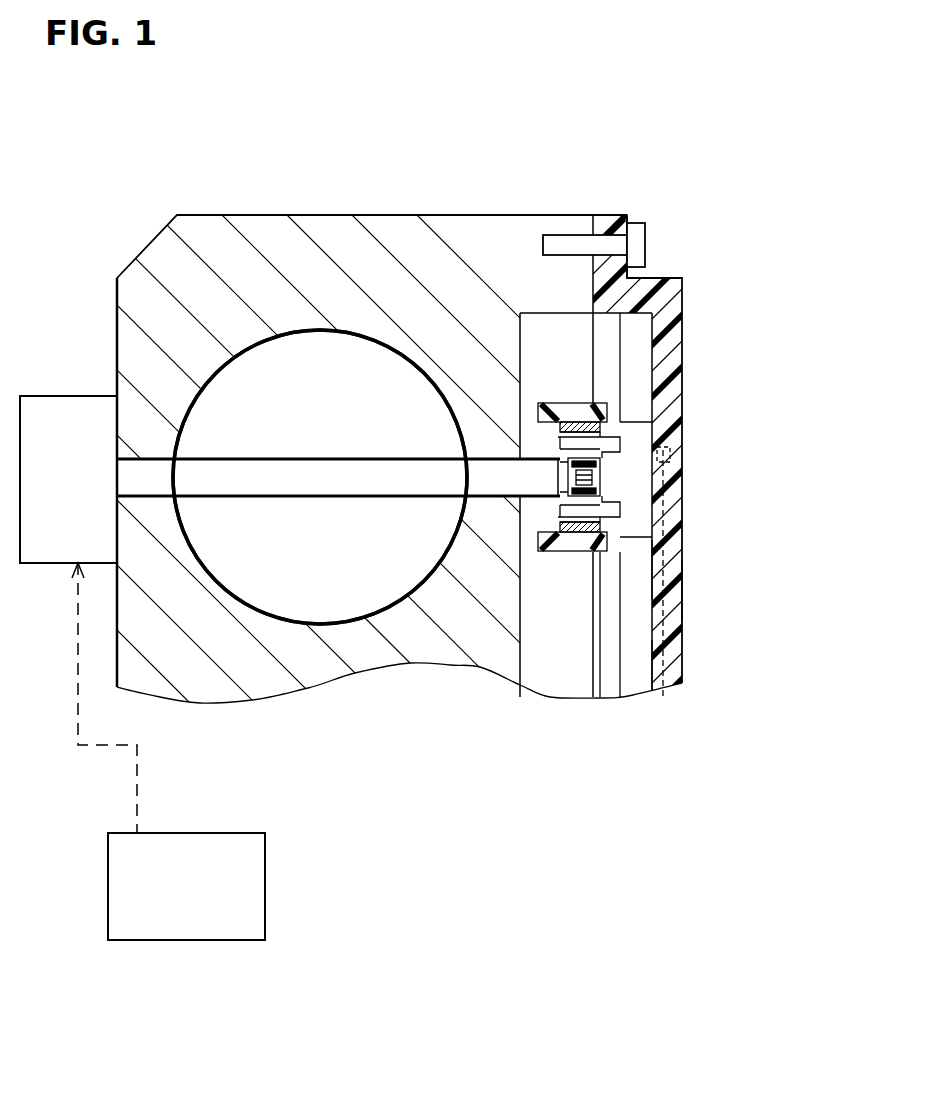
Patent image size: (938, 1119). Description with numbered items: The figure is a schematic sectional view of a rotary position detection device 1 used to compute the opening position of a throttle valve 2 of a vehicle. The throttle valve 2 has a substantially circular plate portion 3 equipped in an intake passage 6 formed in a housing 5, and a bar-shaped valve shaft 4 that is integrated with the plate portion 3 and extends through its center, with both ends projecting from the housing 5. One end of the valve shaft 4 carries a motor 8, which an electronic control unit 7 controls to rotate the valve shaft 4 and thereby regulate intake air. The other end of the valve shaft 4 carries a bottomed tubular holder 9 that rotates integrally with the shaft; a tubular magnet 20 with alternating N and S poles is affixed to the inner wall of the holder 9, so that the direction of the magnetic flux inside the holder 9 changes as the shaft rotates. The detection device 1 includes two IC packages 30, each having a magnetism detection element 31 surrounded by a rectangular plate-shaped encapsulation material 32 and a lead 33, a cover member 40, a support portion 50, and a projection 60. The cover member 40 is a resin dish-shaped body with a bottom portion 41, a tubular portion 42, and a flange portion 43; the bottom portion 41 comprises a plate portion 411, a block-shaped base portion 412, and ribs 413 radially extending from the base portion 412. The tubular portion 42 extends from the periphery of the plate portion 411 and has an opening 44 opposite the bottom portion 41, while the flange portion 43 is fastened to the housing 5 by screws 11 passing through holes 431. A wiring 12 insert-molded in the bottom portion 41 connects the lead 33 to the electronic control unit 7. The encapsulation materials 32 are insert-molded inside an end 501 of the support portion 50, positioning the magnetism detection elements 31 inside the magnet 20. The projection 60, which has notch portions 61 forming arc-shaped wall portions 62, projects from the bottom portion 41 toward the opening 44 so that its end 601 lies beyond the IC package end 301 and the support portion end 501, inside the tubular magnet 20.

The rotary position detection device 1 is at (754, 297).
The throttle valve 2 is at (306, 347).
The plate portion 3 is at (276, 353).
The valve shaft 4 is at (342, 460).
The housing 5 is at (358, 222).
The intake passage 6 is at (397, 395).
The electronic control unit (ECU) 7 is at (196, 840).
The motor 8 is at (53, 400).
The holder 9 is at (564, 424).
The screw 11 is at (640, 226).
The wiring 12 is at (665, 628).
The magnet 20 is at (578, 552).
The IC package 30 is at (560, 462).
The magnetism detection element 31 is at (605, 458).
The encapsulation material 32 is at (548, 414).
The lead 33 is at (608, 466).
The cover member 40 is at (683, 347).
The bottom portion 41 is at (683, 378).
The tubular portion 42 is at (641, 283).
The flange portion 43 is at (607, 215).
The opening 44 is at (590, 665).
The support portion 50 is at (605, 448).
The projection 60 is at (570, 432).
The notch portion 61 is at (565, 493).
The wall portion 62 is at (597, 403).
The IC package end 301 is at (565, 448).
The plate portion 411 is at (683, 563).
The base portion 412 is at (682, 588).
The rib 413 is at (635, 667).
The hole 431 is at (610, 238).
The end of support portion 501 is at (560, 478).
The projection end 601 is at (570, 525).